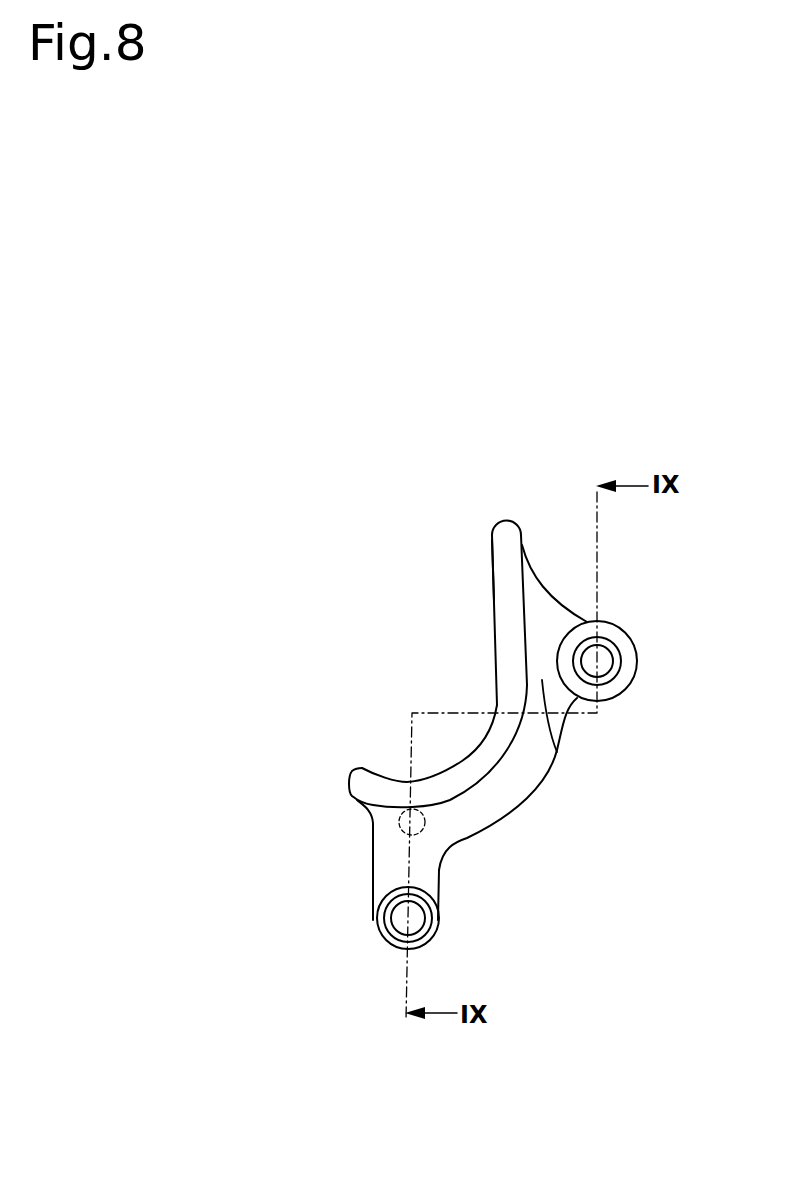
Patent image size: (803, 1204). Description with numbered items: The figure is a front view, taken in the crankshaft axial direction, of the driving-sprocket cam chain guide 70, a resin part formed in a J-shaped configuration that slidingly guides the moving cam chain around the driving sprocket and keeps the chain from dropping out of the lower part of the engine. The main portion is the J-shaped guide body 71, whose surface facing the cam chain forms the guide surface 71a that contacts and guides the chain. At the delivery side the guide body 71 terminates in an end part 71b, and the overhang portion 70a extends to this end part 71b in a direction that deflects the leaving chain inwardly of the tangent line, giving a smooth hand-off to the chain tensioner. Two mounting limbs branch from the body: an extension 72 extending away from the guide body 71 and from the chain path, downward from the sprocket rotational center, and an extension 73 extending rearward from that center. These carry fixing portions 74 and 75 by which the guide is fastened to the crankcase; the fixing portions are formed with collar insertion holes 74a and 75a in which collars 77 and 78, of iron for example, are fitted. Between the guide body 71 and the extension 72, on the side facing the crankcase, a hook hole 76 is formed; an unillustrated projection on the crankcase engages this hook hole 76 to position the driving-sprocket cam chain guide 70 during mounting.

The driving-sprocket cam chain guide 70 is at (282, 540).
The overhang portion 70a is at (497, 540).
The guide body 71 is at (510, 622).
The guide surface 71a is at (498, 680).
The end part 71b is at (503, 518).
The extension 72 is at (390, 851).
The extension 73 is at (557, 752).
The fixing portion 74 is at (433, 928).
The collar insertion hole 74a is at (421, 912).
The fixing portion 75 is at (605, 630).
The collar insertion hole 75a is at (610, 675).
The hook hole 76 is at (407, 813).
The collar 77 is at (387, 930).
The collar 78 is at (612, 660).